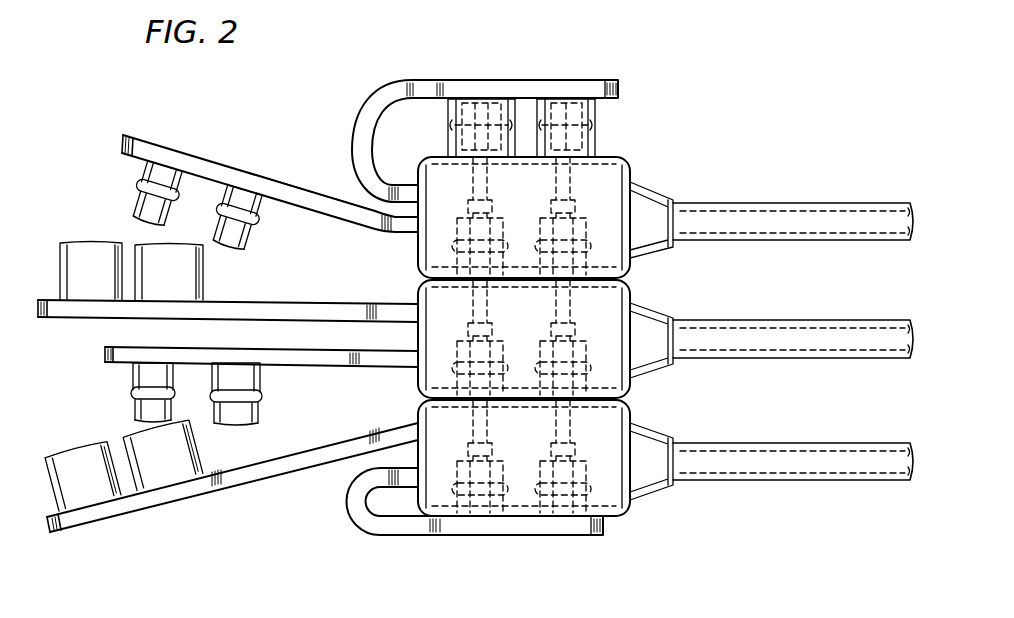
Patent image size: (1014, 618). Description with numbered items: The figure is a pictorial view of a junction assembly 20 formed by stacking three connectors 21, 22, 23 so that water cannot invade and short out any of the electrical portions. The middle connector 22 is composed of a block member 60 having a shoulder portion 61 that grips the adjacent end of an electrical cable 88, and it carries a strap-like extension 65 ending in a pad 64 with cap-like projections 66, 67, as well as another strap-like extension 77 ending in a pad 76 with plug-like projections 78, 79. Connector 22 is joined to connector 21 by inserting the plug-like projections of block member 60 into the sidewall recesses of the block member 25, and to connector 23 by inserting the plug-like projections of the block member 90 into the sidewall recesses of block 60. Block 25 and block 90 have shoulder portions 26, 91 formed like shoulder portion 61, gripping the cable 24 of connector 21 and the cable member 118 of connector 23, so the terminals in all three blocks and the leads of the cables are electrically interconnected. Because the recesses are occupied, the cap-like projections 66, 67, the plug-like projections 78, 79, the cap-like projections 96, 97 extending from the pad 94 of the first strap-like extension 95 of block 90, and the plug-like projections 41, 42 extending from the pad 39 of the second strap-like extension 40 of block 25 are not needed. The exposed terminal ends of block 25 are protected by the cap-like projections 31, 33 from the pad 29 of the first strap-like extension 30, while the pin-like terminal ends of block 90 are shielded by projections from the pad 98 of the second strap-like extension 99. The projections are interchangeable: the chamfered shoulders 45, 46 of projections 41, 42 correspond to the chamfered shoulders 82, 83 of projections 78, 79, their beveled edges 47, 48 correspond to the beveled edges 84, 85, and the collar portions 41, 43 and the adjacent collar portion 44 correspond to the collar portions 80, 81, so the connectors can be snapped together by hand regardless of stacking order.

The junction assembly 20 is at (695, 110).
The connector 21 is at (869, 157).
The connector 22 is at (878, 298).
The connector 23 is at (864, 419).
The cable 24 is at (785, 202).
The block member 25 is at (633, 167).
The shoulder portion 26 is at (660, 190).
The pad 29 is at (590, 80).
The first strap-like extension 30 is at (363, 106).
The cap-like projection 31 is at (597, 136).
The cap-like projection 33 is at (448, 124).
The pad 39 is at (213, 160).
The second strap-like extension 40 is at (327, 195).
The plug-like projection 41 is at (260, 239).
The plug-like projection 42 is at (137, 203).
The collar portion 43 is at (266, 227).
The bolt flange 44 is at (140, 186).
The chamfered shoulder 45 is at (183, 174).
The chamfered shoulder 46 is at (268, 199).
The beveled edge 47 is at (137, 216).
The beveled edge 48 is at (217, 242).
The block member 60 is at (633, 294).
The shoulder portion 61 is at (655, 322).
The pad 64 is at (55, 318).
The strap-like extension 65 is at (338, 301).
The cap-like projection 66 is at (72, 250).
The cap-like projection 67 is at (202, 289).
The pad 76 is at (122, 347).
The strap-like extension 77 is at (337, 348).
The plug-like projection 78 is at (258, 408).
The plug-like projection 79 is at (132, 408).
The collar portion 80 is at (263, 396).
The collar portion 81 is at (133, 391).
The chamfered shoulder 82 is at (175, 369).
The chamfered shoulder 83 is at (262, 368).
The beveled edge 84 is at (135, 422).
The beveled edge 85 is at (257, 425).
The cable 88 is at (813, 320).
The block member 90 is at (622, 415).
The shoulder portion 91 is at (655, 443).
The pad 94 is at (60, 533).
The first strap-like extension 95 is at (362, 433).
The cap-like projection 96 is at (92, 490).
The cap-like projection 97 is at (173, 468).
The pad 98 is at (550, 537).
The second strap-like extension 99 is at (347, 518).
The cable member 118 is at (783, 442).